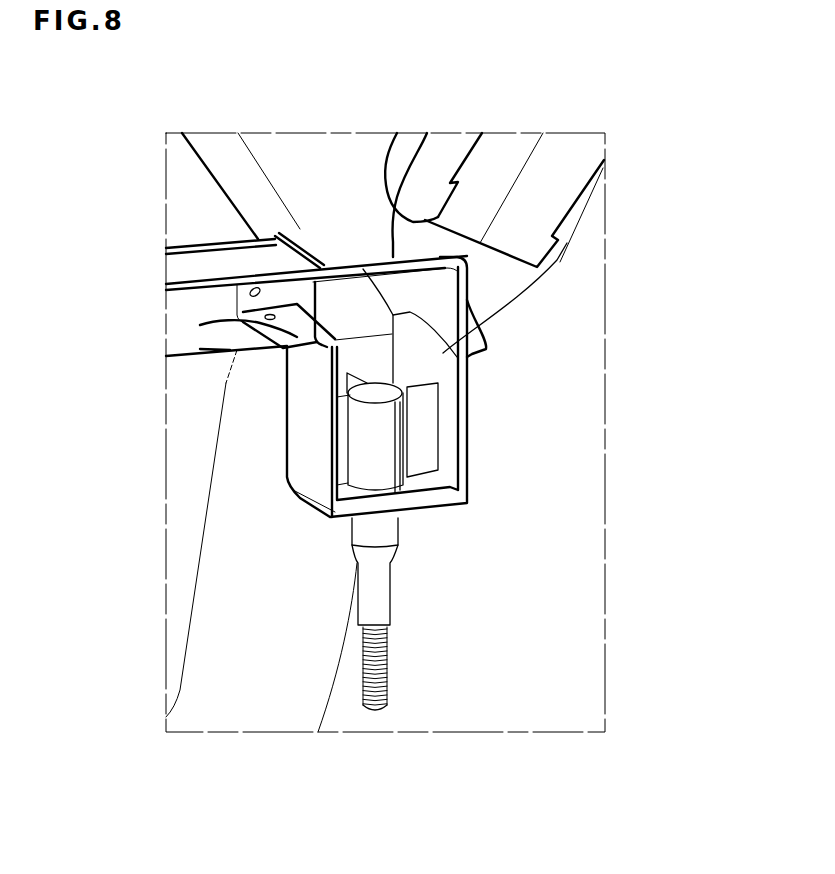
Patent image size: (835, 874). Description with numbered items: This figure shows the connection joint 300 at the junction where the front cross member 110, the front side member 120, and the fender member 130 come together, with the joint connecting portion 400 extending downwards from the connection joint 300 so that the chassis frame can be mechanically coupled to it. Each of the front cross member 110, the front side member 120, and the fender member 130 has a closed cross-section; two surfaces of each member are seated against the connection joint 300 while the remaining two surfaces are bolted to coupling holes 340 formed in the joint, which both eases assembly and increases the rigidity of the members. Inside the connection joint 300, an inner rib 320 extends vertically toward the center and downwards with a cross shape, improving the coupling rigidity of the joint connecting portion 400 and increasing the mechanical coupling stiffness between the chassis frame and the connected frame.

The front cross member 110 is at (200, 268).
The front side member 120 is at (288, 138).
The fender member 130 is at (575, 177).
The connection joint 300 is at (422, 138).
The inner rib 320 is at (423, 440).
The coupling holes 340 is at (232, 311).
The joint connecting portion 400 is at (375, 582).